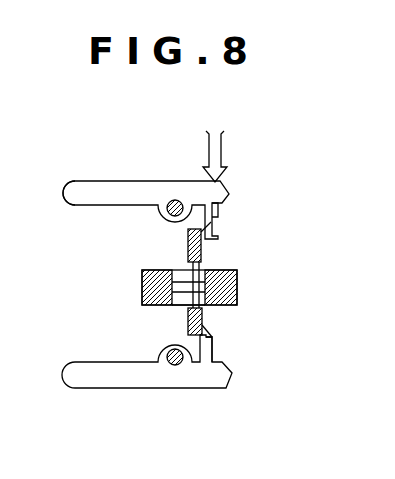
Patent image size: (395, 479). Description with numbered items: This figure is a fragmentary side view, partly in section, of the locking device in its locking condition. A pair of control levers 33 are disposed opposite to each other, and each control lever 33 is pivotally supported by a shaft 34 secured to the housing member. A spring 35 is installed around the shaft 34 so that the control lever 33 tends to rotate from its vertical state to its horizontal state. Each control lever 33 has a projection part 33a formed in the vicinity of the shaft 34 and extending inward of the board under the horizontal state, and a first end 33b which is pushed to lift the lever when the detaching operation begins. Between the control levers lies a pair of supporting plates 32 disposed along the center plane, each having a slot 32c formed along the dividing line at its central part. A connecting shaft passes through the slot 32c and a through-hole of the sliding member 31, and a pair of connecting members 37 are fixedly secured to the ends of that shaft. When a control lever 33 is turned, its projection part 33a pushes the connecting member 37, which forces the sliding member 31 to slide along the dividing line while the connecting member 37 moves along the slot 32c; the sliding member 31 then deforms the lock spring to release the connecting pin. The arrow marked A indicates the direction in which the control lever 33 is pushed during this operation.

The sliding member 31 is at (141, 283).
The supporting plate 32 is at (237, 279).
The slot 32c is at (172, 307).
The control lever 33 is at (121, 192).
The projection part 33a is at (218, 212).
The first end 33b is at (73, 188).
The shaft 34 is at (177, 200).
The spring 35 is at (212, 220).
The connecting member 37 is at (203, 246).
The direction of movement A is at (223, 156).